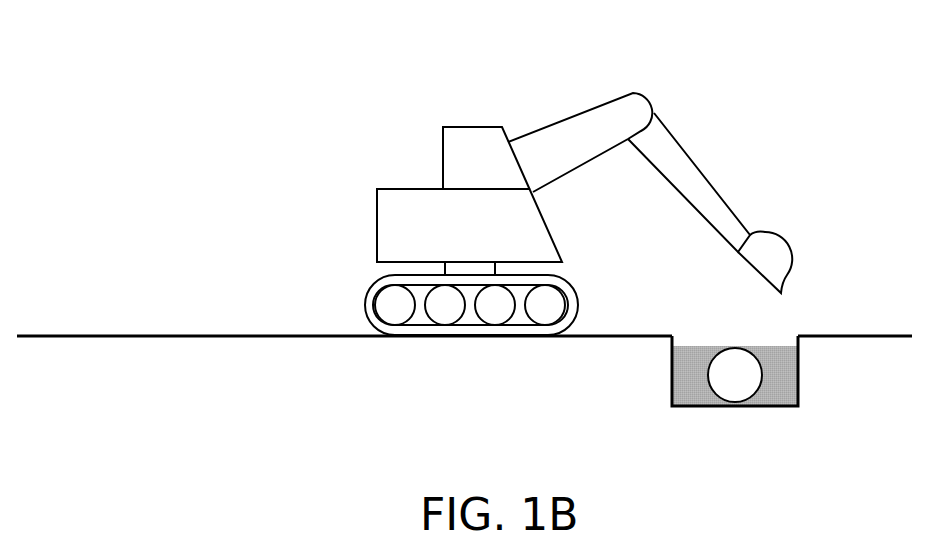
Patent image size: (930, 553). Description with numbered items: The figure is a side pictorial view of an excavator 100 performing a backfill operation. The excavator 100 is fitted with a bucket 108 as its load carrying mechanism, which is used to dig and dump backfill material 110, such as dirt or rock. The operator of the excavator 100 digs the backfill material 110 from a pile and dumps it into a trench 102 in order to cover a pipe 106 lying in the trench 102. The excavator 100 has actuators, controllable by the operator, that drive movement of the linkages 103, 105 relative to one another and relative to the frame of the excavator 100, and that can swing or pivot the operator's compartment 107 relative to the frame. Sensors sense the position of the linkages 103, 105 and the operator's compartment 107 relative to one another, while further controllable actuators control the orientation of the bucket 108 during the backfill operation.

The excavator 100 is at (460, 127).
The trench 102 is at (792, 350).
The linkage 103 is at (608, 117).
The linkage 105 is at (682, 158).
The pipe 106 is at (760, 375).
The operator's compartment 107 is at (478, 234).
The bucket 108 is at (782, 235).
The backfill material 110 is at (685, 353).